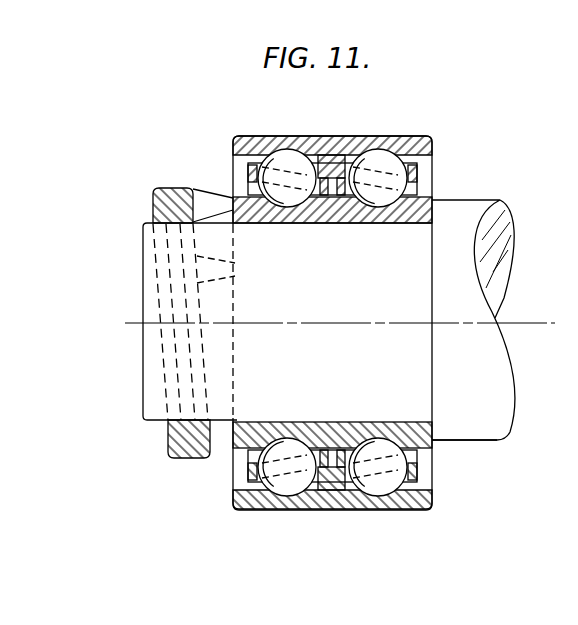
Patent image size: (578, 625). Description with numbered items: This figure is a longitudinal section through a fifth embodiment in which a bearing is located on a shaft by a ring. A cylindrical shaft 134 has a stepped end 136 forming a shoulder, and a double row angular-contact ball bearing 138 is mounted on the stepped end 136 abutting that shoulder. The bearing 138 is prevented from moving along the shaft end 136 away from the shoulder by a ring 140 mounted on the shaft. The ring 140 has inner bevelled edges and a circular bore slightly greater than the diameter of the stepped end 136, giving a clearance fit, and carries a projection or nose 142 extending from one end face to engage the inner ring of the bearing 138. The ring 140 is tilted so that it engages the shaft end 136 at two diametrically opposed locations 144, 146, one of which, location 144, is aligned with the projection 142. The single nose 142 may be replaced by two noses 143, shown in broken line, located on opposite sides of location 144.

The cylindrical shaft 134 is at (467, 206).
The stepped end 136 is at (418, 386).
The double row angular-contact ball bearing 138 is at (442, 135).
The ring 140 is at (168, 190).
The projection or nose 142 is at (212, 197).
The noses 143 is at (197, 266).
The location of engagement 144 is at (173, 228).
The location of engagement 146 is at (196, 421).